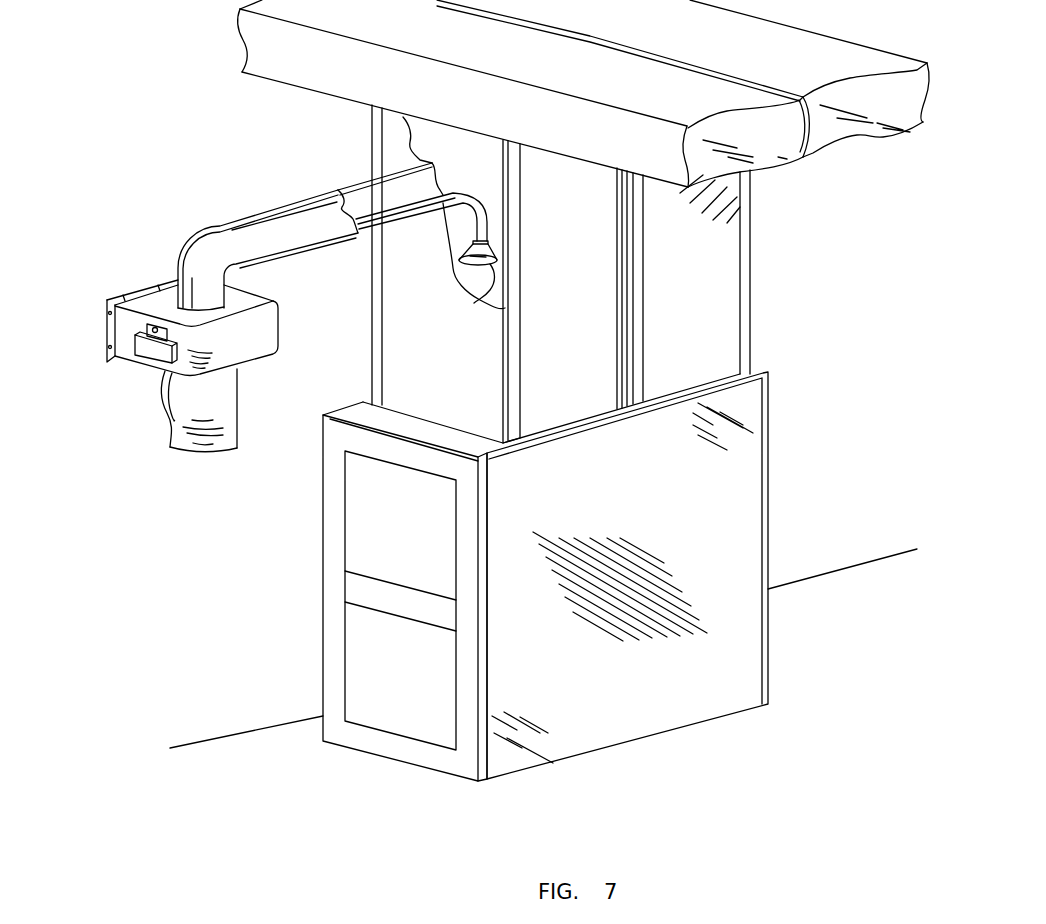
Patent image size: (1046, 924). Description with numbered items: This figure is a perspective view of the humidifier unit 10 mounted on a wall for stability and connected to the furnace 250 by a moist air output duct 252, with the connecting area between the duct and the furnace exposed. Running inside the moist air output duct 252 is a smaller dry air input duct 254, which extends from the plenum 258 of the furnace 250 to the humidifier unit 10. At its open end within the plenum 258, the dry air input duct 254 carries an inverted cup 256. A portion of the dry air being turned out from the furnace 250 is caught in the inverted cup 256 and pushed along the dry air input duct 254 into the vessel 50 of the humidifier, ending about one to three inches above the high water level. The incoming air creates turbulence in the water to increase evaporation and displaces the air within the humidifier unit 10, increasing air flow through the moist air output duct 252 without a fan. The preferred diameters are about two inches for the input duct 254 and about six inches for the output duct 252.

The humidifier unit 10 is at (88, 312).
The vessel 50 is at (222, 423).
The furnace 250 is at (748, 496).
The moist air output duct 252 is at (303, 235).
The dry air input duct 254 is at (393, 215).
The inverted cup 256 is at (480, 300).
The plenum 258 is at (730, 277).